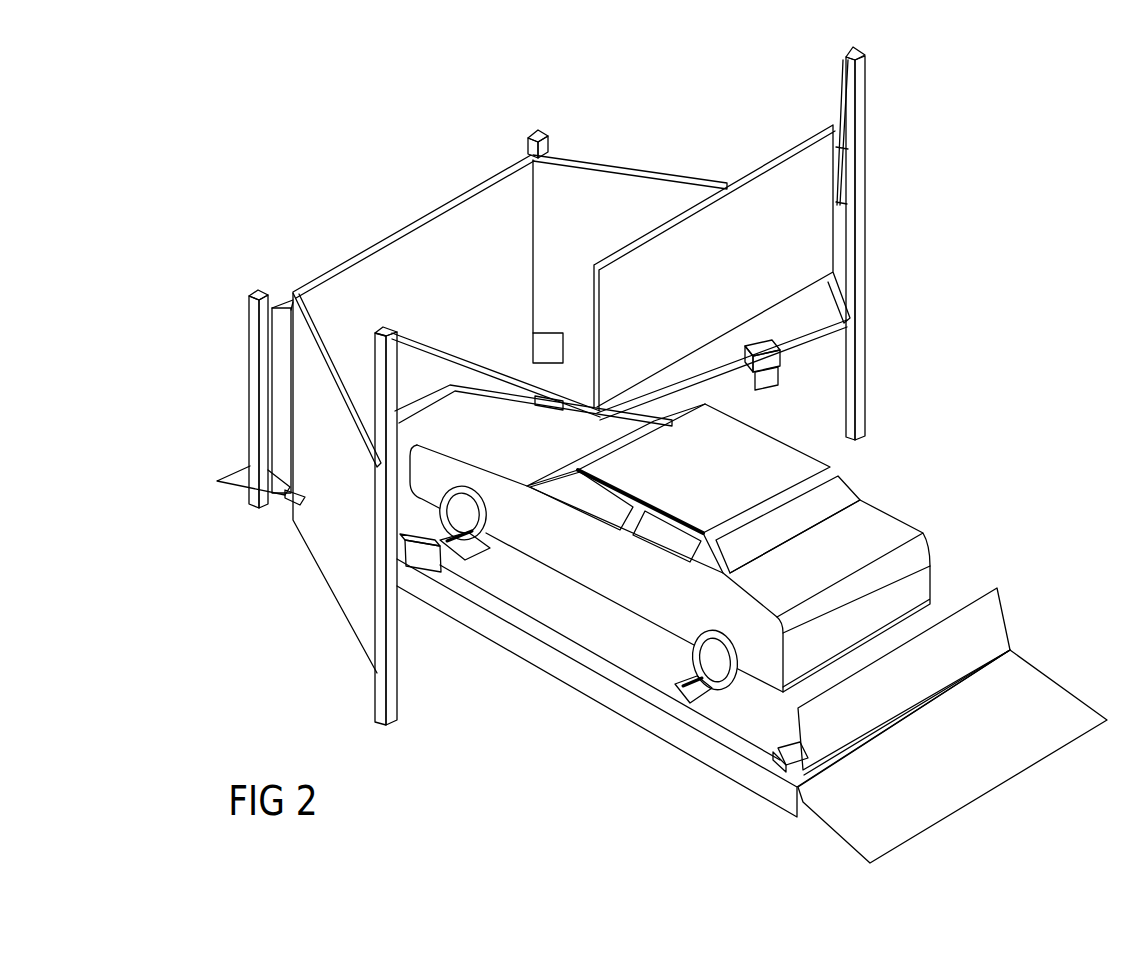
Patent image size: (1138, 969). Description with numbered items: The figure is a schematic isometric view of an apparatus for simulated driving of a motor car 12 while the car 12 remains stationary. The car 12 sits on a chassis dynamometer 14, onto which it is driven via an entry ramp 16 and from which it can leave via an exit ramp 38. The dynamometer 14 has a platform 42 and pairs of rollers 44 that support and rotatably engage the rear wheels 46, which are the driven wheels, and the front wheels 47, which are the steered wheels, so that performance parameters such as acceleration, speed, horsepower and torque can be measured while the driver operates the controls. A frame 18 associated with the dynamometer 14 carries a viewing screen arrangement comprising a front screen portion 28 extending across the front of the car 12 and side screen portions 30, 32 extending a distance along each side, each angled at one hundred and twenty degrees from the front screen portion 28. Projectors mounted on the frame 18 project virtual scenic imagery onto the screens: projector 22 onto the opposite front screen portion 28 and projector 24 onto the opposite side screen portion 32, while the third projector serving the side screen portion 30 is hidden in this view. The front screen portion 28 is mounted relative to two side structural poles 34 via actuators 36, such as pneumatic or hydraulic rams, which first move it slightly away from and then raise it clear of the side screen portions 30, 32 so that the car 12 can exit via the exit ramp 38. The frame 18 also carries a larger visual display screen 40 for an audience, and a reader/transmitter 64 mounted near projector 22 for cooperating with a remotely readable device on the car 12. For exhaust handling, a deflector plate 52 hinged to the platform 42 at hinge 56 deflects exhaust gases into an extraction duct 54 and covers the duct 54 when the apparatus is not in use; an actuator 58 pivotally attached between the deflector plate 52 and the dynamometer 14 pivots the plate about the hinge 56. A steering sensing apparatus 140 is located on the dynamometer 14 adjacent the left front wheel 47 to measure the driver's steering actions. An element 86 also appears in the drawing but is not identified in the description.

The motor car 12 is at (878, 514).
The chassis dynamometer 14 is at (535, 645).
The entry ramp 16 is at (1015, 747).
The frame 18 is at (863, 232).
The projector 22 is at (785, 338).
The projector 24 is at (550, 402).
The front screen portion 28 is at (436, 240).
The side screen portion 30 is at (337, 327).
The side screen portion 32 is at (647, 197).
The side structural poles 34 is at (528, 141).
The actuators 36 is at (278, 347).
The exit ramp 38 is at (242, 473).
The visual display screen 40 is at (780, 193).
The platform 42 is at (573, 637).
The pairs of rollers 44 is at (470, 548).
The rear wheels 46 is at (696, 655).
The front wheels 47 is at (482, 504).
The deflector plate 52 is at (983, 625).
The extraction duct 54 is at (790, 742).
The hinge 56 is at (862, 742).
The actuator 58 is at (777, 757).
The reader/transmitter 64 is at (768, 390).
The mounting block 86 is at (544, 343).
The steering sensing apparatus 140 is at (418, 562).